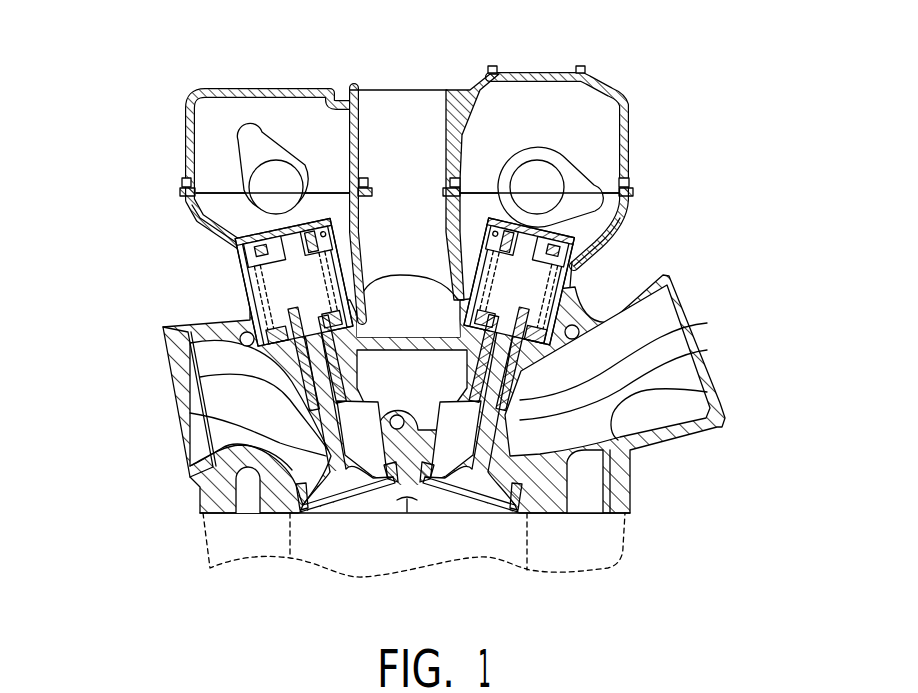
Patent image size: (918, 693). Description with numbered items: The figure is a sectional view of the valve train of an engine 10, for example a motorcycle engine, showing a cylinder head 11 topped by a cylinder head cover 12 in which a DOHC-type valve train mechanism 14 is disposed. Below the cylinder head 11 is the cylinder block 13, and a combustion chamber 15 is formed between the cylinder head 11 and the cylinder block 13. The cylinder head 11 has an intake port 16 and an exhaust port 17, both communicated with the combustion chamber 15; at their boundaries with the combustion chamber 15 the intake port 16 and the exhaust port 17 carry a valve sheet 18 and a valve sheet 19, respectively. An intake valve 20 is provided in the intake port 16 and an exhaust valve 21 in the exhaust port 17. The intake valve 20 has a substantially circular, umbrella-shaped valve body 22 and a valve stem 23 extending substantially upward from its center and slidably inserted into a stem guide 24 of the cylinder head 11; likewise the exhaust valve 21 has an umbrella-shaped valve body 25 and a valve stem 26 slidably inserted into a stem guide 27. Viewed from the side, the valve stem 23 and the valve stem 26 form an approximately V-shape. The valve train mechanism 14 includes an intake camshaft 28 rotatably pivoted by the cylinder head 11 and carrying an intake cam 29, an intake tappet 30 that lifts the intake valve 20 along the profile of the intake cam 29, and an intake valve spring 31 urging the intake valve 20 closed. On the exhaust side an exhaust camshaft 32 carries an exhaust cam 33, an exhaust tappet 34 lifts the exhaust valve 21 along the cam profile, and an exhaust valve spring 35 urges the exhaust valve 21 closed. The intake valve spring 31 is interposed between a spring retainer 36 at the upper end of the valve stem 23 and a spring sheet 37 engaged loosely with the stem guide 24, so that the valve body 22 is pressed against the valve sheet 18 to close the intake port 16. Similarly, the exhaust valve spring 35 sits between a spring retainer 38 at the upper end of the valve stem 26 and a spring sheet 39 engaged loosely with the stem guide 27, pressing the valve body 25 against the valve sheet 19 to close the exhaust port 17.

The engine 10 is at (630, 107).
The cylinder head 11 is at (630, 210).
The cylinder head cover 12 is at (190, 133).
The cylinder block 13 is at (625, 548).
The valve train mechanism 14 is at (300, 147).
The combustion chamber 15 is at (407, 514).
The intake port 16 is at (707, 392).
The exhaust port 17 is at (195, 464).
The valve sheet 18 is at (505, 508).
The valve sheet 19 is at (318, 517).
The intake valve 20 is at (707, 350).
The exhaust valve 21 is at (190, 413).
The valve body 22 is at (437, 510).
The valve stem 23 is at (595, 276).
The stem guide 24 is at (707, 323).
The valve body 25 is at (383, 490).
The valve stem 26 is at (247, 285).
The stem guide 27 is at (200, 377).
The intake camshaft 28 is at (538, 160).
The intake cam 29 is at (577, 165).
The intake tappet 30 is at (592, 243).
The intake valve spring 31 is at (598, 300).
The exhaust camshaft 32 is at (277, 160).
The exhaust cam 33 is at (235, 147).
The exhaust tappet 34 is at (250, 240).
The exhaust valve spring 35 is at (258, 303).
The spring retainer 36 is at (471, 238).
The spring sheet 37 is at (462, 316).
The spring retainer 38 is at (378, 241).
The spring sheet 39 is at (340, 318).